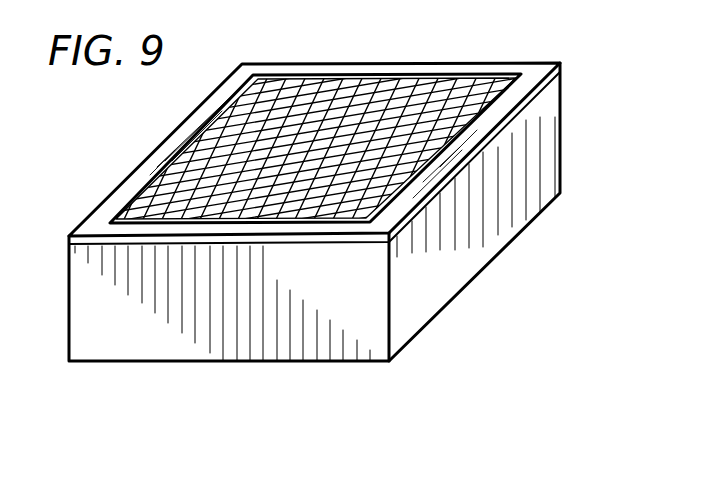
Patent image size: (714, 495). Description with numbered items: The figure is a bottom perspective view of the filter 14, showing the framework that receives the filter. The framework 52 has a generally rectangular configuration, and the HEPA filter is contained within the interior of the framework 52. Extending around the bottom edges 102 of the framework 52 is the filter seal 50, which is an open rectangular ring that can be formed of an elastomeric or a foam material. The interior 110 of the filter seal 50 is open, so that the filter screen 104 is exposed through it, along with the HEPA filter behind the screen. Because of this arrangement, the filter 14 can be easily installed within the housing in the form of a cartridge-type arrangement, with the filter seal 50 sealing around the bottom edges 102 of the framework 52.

The filter 14 is at (515, 272).
The filter seal 50 is at (490, 64).
The framework 52 is at (547, 170).
The bottom edges 102 is at (558, 77).
The filter screen 104 is at (192, 160).
The interior 110 is at (337, 82).